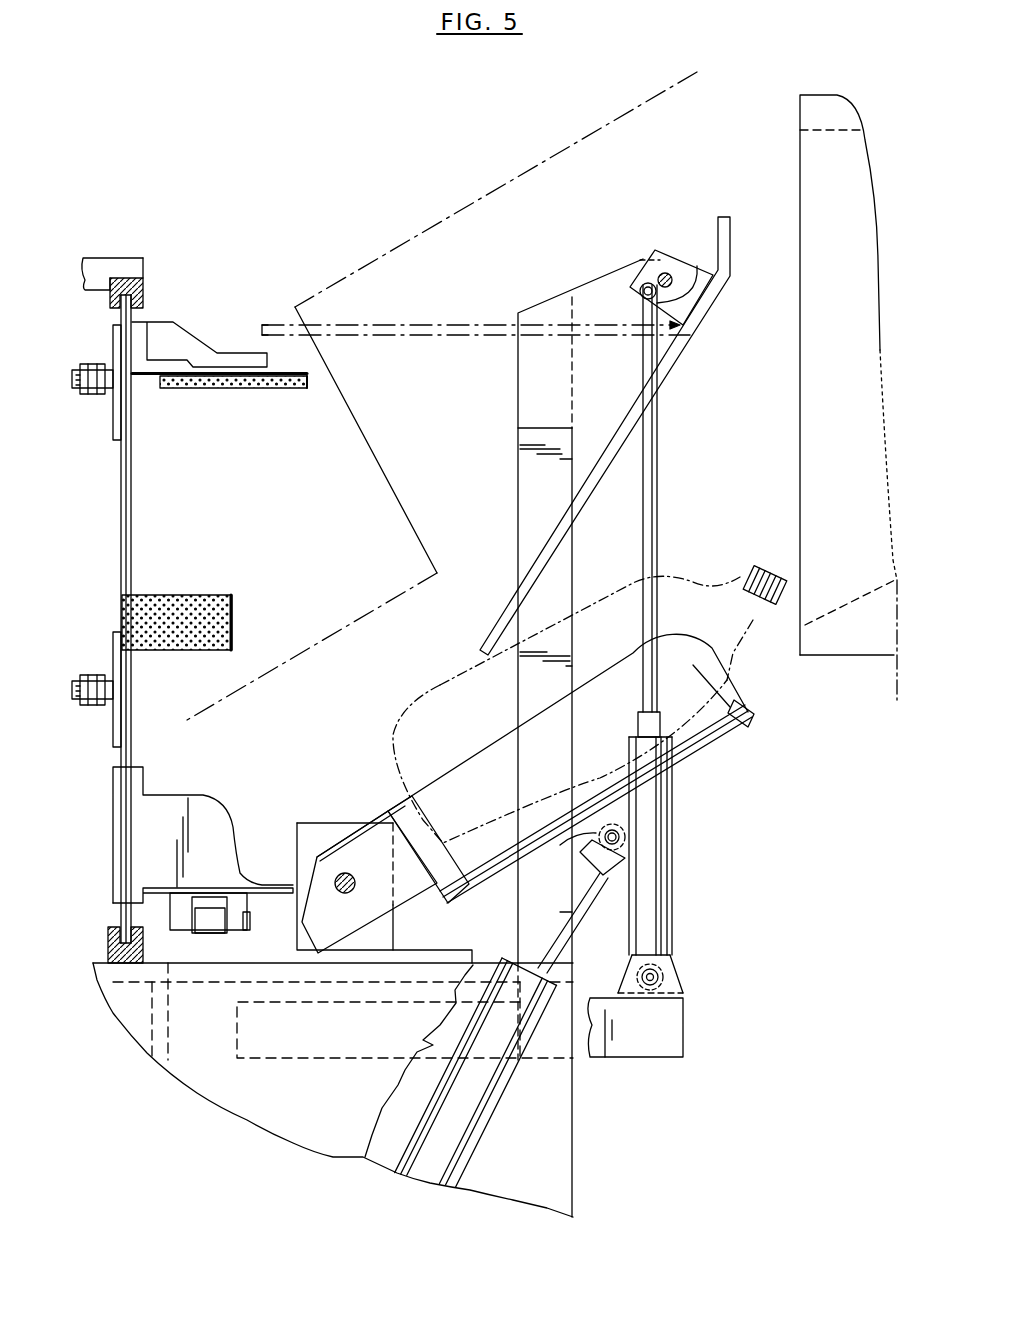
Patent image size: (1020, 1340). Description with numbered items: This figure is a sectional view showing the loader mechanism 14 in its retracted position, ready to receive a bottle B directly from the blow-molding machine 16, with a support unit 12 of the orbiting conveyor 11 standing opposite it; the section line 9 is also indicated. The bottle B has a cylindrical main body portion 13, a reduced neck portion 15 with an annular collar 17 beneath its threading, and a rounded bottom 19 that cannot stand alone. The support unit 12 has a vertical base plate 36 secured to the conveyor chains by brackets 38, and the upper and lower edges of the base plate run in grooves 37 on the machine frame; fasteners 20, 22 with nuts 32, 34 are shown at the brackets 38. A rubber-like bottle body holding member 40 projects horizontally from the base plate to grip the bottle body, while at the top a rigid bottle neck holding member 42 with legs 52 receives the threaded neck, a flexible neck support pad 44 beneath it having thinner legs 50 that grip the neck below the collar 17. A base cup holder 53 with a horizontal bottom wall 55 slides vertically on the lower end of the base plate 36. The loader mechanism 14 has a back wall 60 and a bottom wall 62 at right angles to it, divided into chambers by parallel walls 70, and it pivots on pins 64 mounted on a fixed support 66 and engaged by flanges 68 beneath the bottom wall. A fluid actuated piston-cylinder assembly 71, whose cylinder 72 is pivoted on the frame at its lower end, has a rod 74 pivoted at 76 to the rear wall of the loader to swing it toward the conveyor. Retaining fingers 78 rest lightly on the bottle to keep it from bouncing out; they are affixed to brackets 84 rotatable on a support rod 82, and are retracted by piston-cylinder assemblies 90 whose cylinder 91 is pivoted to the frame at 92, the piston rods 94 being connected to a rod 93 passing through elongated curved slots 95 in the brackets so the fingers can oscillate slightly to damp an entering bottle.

The section line 9 is at (677, 82).
The orbiting conveyor 11 is at (103, 243).
The support unit 12 is at (170, 275).
The cylindrical main body portion 13 is at (440, 685).
The loader mechanism 14 is at (681, 897).
The neck portion 15 is at (742, 630).
The blow-molding machine 16 is at (830, 101).
The annular collar 17 is at (740, 570).
The bottom 19 is at (390, 733).
The bolt 20 is at (75, 368).
The bolt 22 is at (75, 703).
The nut 32 is at (100, 394).
The nut 34 is at (92, 675).
The vertical base plate 36 is at (132, 530).
The grooves 37 is at (125, 287).
The brackets 38 is at (117, 415).
The bottle body holding member 40 is at (208, 603).
The bottle neck holding member 42 is at (182, 340).
The neck support pad 44 is at (247, 388).
The legs of the pad 50 is at (305, 388).
The legs of the member 52 is at (270, 356).
The base cup holder 53 is at (200, 800).
The horizontal bottom wall 55 is at (263, 884).
The back wall 60 is at (723, 742).
The bottom wall 62 is at (432, 852).
The pins 64 is at (348, 877).
The fixed support 66 is at (385, 930).
The flanges 68 is at (338, 838).
The parallel walls 70 is at (497, 743).
The piston-cylinder assembly 71 is at (500, 1117).
The cylinder 72 is at (460, 1153).
The rod 74 is at (587, 897).
The pivot 76 is at (580, 868).
The retaining fingers 78 is at (435, 325).
The support rod 82 is at (666, 273).
The brackets 84 is at (653, 255).
The piston-cylinder assemblies 90 is at (675, 842).
The cylinder 91 is at (660, 898).
The pivot 92 is at (660, 977).
The rod 93 is at (641, 297).
The piston rods 94 is at (657, 493).
The slots 95 is at (697, 267).
The bottle B is at (687, 580).